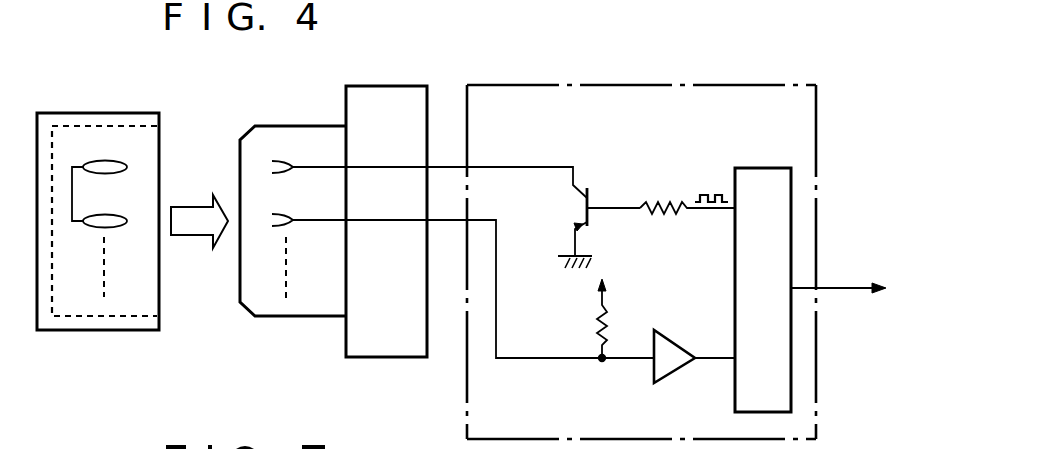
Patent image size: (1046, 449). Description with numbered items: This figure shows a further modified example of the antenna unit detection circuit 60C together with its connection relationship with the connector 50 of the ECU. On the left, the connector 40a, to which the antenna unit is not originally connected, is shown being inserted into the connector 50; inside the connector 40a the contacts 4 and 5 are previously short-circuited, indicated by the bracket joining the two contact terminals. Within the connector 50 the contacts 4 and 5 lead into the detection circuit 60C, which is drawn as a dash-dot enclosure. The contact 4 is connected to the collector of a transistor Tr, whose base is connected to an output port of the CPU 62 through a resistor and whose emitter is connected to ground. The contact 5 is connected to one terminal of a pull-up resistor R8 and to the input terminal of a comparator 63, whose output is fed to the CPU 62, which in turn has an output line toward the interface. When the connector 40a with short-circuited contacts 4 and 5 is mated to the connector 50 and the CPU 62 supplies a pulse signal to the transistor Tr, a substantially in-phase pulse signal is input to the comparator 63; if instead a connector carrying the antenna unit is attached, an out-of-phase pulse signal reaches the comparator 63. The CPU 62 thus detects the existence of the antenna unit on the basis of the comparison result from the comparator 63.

The connector 40a is at (115, 112).
The contact ④ 4 is at (335, 173).
The contact ⑤ 5 is at (368, 277).
The connector 50 is at (393, 86).
The antenna unit detection circuit 60C is at (633, 85).
The transistor Tr is at (646, 228).
The pull-up resistor R8 is at (624, 318).
The comparator 63 is at (673, 373).
The CPU 62 is at (760, 168).